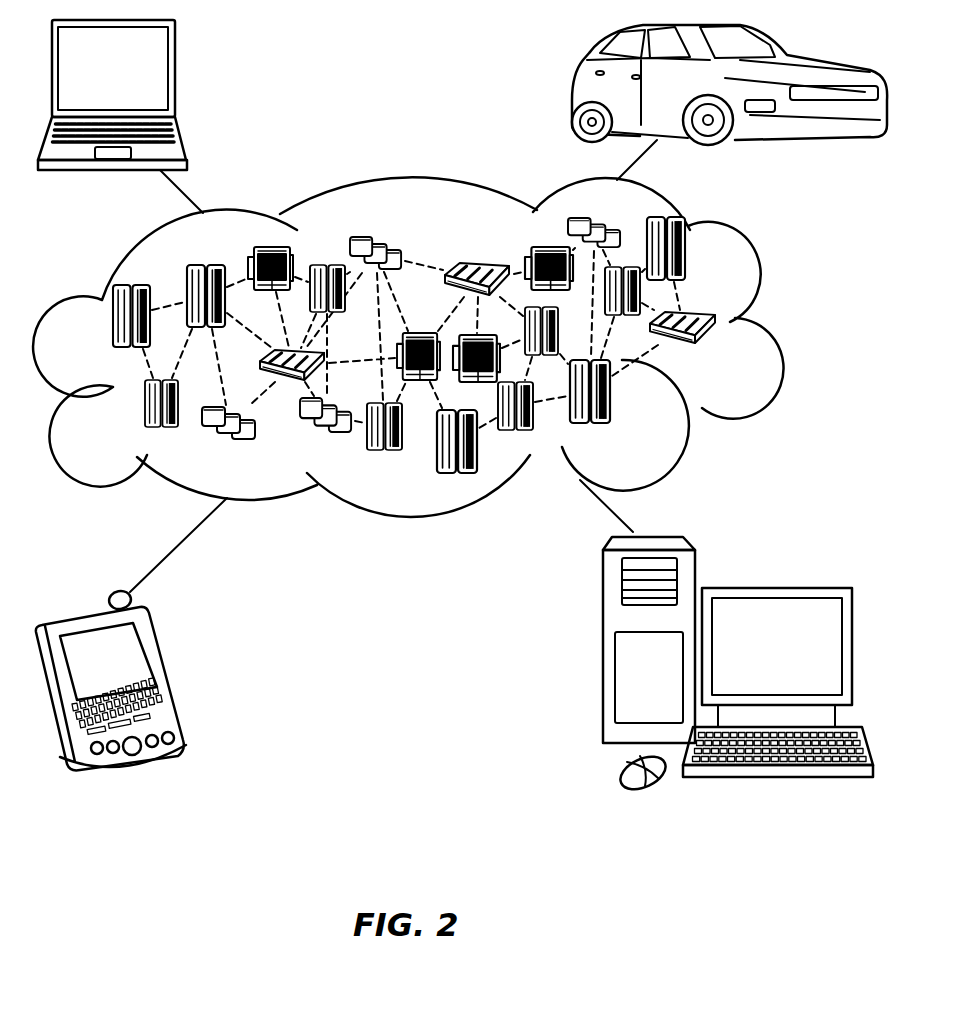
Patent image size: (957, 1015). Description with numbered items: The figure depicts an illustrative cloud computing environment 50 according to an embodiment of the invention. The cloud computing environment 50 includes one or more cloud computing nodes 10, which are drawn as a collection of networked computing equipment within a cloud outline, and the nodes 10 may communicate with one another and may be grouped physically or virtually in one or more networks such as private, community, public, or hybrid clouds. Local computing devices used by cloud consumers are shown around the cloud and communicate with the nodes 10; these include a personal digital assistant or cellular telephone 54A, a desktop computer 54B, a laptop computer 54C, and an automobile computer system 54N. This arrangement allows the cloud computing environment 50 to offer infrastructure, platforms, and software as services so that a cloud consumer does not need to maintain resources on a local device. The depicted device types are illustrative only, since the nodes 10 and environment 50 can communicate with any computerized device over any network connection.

The cloud computing nodes 10 is at (730, 356).
The cloud computing environment 50 is at (775, 325).
The personal digital assistant or cellular telephone 54A is at (163, 673).
The desktop computer 54B is at (773, 588).
The laptop computer 54C is at (177, 78).
The automobile computer system 54N is at (573, 88).